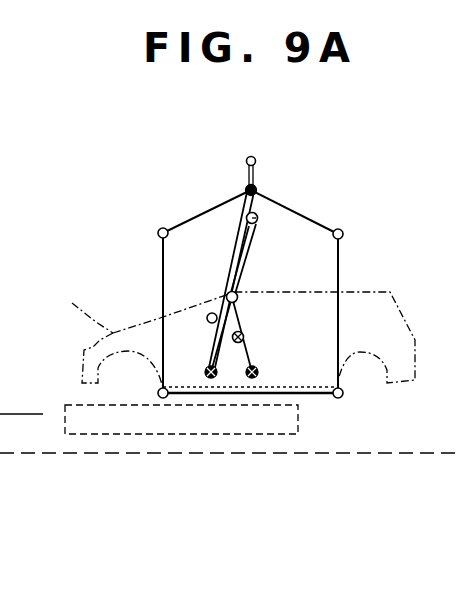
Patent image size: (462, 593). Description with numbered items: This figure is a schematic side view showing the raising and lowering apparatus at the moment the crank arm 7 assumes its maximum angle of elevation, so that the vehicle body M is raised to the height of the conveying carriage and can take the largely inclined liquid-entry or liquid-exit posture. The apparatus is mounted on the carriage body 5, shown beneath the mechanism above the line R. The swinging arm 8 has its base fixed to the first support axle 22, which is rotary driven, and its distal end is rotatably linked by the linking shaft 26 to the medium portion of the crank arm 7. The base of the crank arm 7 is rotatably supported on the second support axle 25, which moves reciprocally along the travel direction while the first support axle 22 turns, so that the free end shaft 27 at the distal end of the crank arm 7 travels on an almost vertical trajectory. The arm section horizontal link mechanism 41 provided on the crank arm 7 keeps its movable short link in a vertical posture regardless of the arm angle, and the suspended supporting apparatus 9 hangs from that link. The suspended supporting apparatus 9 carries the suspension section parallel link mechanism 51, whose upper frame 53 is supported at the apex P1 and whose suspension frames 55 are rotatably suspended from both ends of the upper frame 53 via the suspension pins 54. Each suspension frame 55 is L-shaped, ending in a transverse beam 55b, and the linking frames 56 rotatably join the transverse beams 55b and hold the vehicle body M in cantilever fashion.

The carriage body 5 is at (68, 405).
The crank arm 7 is at (237, 270).
The swinging arm 8 is at (250, 338).
The suspended supporting apparatus 9 is at (225, 324).
The first support axle 22 is at (262, 372).
The second support axle 25 is at (204, 371).
The linking shaft 26 is at (240, 290).
The free end shaft 27 is at (264, 226).
The arm section horizontal link mechanism 41 is at (218, 256).
The suspension section parallel link mechanism 51 is at (205, 182).
The upper frame 53 is at (293, 208).
The suspension pins 54 is at (163, 228).
The suspension frames 55 is at (162, 265).
The transverse beam 55b is at (163, 398).
The linking frames 56 is at (245, 395).
The apex P1 is at (257, 165).
The vehicle body M is at (231, 339).
The road surface R is at (405, 453).